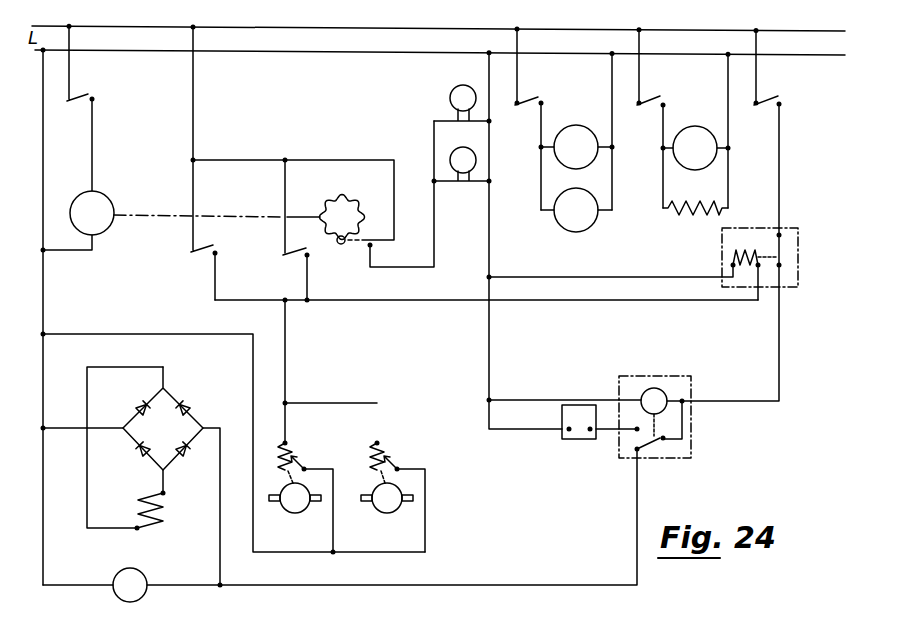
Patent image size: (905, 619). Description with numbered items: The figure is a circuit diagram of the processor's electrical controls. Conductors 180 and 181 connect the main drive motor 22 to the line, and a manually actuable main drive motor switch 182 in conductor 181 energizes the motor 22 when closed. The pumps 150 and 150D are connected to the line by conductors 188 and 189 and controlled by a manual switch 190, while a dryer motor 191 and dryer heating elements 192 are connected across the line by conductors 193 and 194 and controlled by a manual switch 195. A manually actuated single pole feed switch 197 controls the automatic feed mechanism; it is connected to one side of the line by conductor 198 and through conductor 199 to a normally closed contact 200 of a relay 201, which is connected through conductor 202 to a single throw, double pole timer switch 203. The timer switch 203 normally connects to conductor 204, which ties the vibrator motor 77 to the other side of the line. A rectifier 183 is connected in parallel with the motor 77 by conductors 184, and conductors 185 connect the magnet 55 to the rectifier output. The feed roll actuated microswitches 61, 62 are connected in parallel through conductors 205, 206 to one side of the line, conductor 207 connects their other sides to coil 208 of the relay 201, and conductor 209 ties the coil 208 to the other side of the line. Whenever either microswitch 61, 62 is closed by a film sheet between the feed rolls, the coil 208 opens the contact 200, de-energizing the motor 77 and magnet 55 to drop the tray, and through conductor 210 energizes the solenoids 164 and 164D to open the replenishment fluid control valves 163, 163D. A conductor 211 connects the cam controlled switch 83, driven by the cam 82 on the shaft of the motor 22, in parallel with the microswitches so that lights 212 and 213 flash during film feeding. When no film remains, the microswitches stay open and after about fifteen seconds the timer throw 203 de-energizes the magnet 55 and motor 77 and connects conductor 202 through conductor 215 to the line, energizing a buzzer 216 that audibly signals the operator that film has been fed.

The main drive motor 22 is at (108, 198).
The magnet 55 is at (160, 523).
The feed roll actuated microswitch 61 is at (198, 260).
The feed roll actuated microswitch 62 is at (300, 260).
The vibrator motor 77 is at (146, 595).
The cam 82 is at (349, 198).
The cam controlled switch 83 is at (379, 250).
The pump 150 is at (589, 229).
The pump 150D is at (562, 130).
The replenishment fluid control valve 163 is at (385, 513).
The replenishment fluid control valve 163D is at (288, 513).
The solenoid 164 is at (396, 454).
The solenoid 164D is at (296, 452).
The conductor 180 is at (44, 163).
The conductor 181 is at (93, 152).
The main drive motor switch 182 is at (84, 95).
The rectifier 183 is at (188, 432).
The conductors 184 is at (66, 430).
The conductors 185 is at (88, 480).
The conductor 188 is at (519, 63).
The conductor 189 is at (613, 142).
The switch 190 is at (530, 104).
The dryer motor 191 is at (677, 166).
The dryer heating elements 192 is at (696, 216).
The conductor 193 is at (641, 64).
The conductor 194 is at (730, 146).
The switch 195 is at (657, 98).
The feed switch 197 is at (770, 107).
The conductor 198 is at (758, 64).
The conductor 199 is at (781, 181).
The normally closed contact 200 is at (782, 247).
The relay 201 is at (800, 259).
The conductor 202 is at (780, 361).
The timer switch 203 is at (652, 452).
The conductor 204 is at (637, 553).
The conductor 205 is at (196, 233).
The conductor 206 is at (284, 199).
The conductor 207 is at (378, 299).
The coil 208 is at (743, 242).
The conductor 209 is at (545, 266).
The conductor 210 is at (287, 358).
The conductor 211 is at (395, 168).
The light 212 is at (453, 89).
The light 213 is at (449, 149).
The conductor 215 is at (487, 401).
The buzzer 216 is at (576, 441).